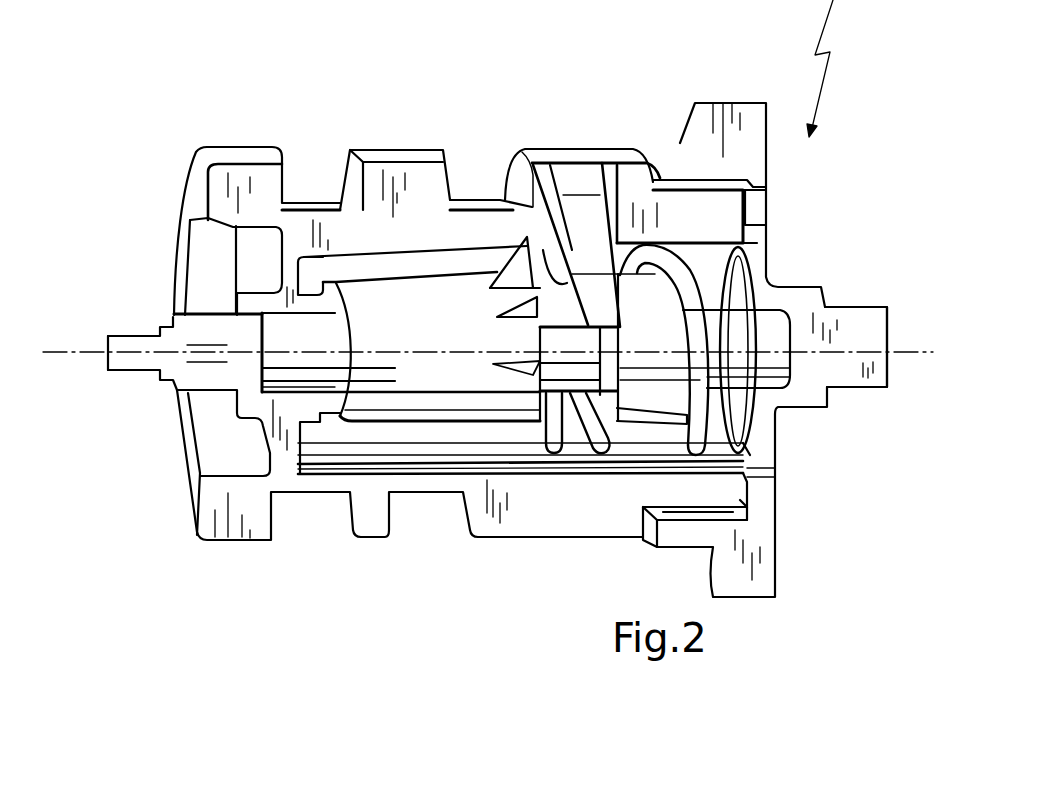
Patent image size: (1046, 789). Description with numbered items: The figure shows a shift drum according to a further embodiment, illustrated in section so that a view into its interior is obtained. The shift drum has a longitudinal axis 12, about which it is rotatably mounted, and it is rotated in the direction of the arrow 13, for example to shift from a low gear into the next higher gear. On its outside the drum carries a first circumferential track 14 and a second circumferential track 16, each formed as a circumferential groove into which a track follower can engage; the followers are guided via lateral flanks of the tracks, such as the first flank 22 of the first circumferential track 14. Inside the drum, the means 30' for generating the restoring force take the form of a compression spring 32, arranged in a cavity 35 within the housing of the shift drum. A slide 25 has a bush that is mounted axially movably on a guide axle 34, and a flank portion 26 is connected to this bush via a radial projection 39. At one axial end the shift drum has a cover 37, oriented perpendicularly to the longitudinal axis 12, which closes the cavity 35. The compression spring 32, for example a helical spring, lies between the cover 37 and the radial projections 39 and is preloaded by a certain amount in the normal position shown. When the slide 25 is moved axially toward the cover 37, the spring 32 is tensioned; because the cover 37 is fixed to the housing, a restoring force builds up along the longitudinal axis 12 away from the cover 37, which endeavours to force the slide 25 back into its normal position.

The longitudinal axis 12 is at (915, 348).
The arrow 13 is at (57, 343).
The first circumferential track 14 is at (423, 506).
The second circumferential track 16 is at (313, 168).
The first flank 22 is at (510, 160).
The slide 25 is at (580, 183).
The flank portion 26 is at (551, 165).
The means for generating the restoring force 30' is at (805, 383).
The compression spring 32 is at (690, 366).
The guide axle 34 is at (287, 350).
The cavity 35 is at (367, 384).
The cover 37 is at (853, 307).
The radial projection 39 is at (526, 374).